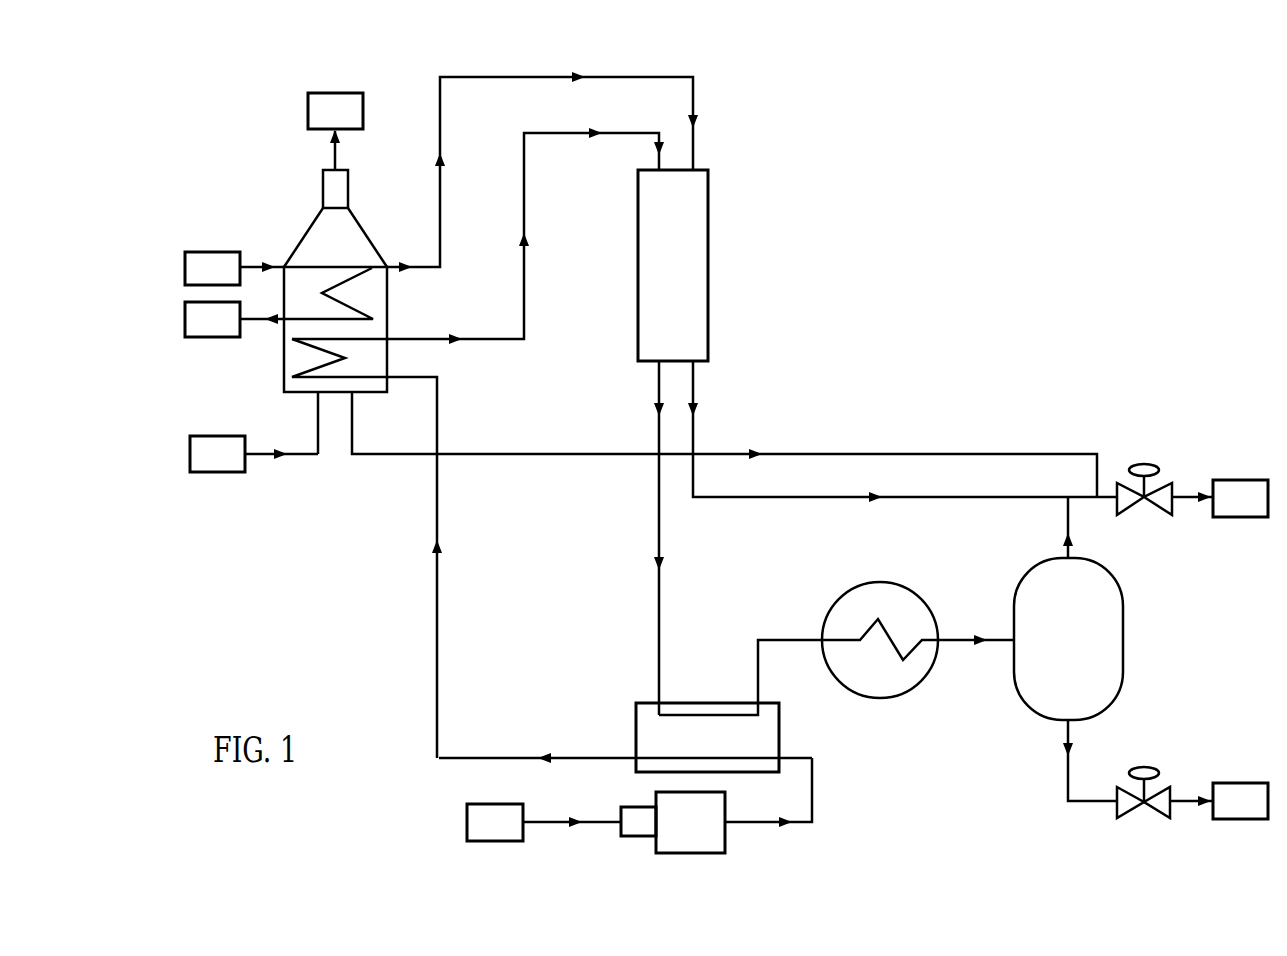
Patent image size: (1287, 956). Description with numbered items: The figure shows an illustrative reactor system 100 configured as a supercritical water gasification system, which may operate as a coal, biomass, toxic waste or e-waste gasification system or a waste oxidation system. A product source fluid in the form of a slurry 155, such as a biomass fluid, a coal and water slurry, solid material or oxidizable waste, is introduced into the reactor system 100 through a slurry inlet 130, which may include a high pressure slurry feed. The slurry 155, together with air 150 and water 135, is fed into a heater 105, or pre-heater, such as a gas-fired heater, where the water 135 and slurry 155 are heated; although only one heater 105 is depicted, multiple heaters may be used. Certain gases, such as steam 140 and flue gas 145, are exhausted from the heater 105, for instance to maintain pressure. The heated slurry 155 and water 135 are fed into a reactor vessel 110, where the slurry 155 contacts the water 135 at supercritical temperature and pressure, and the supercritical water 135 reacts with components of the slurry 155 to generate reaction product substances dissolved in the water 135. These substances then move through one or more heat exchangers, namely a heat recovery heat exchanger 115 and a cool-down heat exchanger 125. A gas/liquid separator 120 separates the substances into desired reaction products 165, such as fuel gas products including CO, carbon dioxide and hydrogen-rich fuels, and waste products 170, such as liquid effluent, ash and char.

The reactor system 100 is at (964, 163).
The heater 105 is at (668, 415).
The reactor vessel 110 is at (877, 442).
The heat recovery heat exchanger 115 is at (630, 733).
The gas/liquid separator 120 is at (1068, 649).
The cool-down heat exchanger 125 is at (918, 640).
The slurry inlet 130 is at (673, 822).
The water 135 is at (212, 268).
The steam 140 is at (212, 319).
The flue gas 145 is at (335, 111).
The air 150 is at (254, 454).
The slurry 155 is at (544, 822).
The reaction products 165 is at (1192, 793).
The waste products 170 is at (1192, 490).